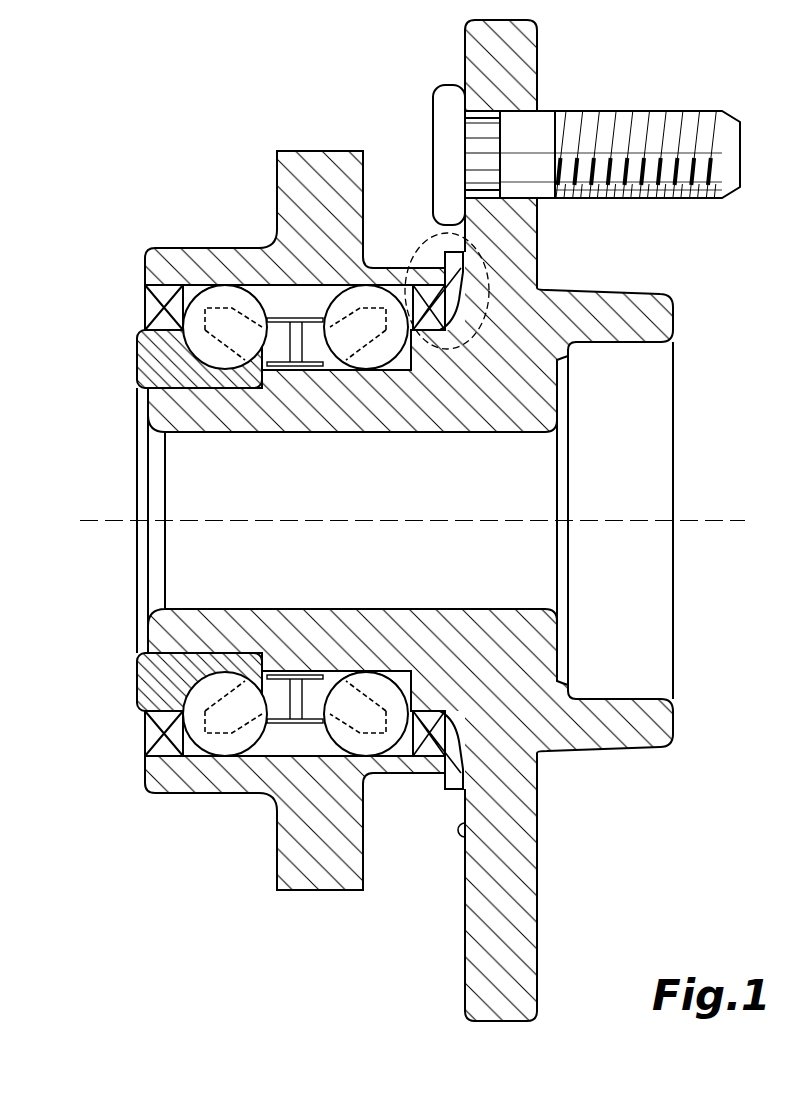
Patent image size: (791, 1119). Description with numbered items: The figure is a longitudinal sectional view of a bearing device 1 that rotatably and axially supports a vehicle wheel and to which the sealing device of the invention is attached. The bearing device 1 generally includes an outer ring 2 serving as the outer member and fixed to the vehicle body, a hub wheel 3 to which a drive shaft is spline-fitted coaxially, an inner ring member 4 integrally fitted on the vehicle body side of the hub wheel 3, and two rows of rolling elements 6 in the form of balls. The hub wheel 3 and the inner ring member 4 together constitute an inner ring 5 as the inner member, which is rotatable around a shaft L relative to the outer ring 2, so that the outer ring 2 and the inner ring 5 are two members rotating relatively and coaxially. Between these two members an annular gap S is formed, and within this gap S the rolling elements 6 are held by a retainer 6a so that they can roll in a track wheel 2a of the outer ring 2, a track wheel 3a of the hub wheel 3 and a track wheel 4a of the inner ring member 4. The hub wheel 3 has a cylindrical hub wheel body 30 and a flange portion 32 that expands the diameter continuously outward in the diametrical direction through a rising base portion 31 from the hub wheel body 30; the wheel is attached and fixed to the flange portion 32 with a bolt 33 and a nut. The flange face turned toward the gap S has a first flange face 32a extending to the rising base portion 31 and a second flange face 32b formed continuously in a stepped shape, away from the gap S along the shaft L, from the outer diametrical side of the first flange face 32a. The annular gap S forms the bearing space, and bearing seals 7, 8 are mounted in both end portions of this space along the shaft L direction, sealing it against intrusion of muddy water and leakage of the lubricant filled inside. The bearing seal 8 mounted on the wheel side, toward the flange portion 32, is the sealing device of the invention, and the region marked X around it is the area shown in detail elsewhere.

The bearing device 1 is at (240, 92).
The outer ring 2 is at (223, 250).
The track wheel of the outer ring 2a is at (241, 293).
The hub wheel 3 is at (168, 402).
The track wheel of the hub wheel 3a is at (390, 690).
The inner ring member 4 is at (138, 357).
The track wheel of the inner ring member 4a is at (183, 698).
The inner ring 5 is at (68, 349).
The rolling elements 6 is at (202, 303).
The retainer 6a is at (373, 303).
The bearing seal 7 is at (148, 733).
The bearing seal 8 is at (448, 298).
The hub wheel body 30 is at (217, 622).
The rising base portion 31 is at (457, 723).
The flange portion 32 is at (522, 957).
The first flange face 32a is at (462, 767).
The second flange face 32b is at (482, 848).
The bolt 33 is at (608, 118).
The enlarged region X is at (430, 240).
The shaft L is at (725, 512).
The annular gap S is at (293, 715).